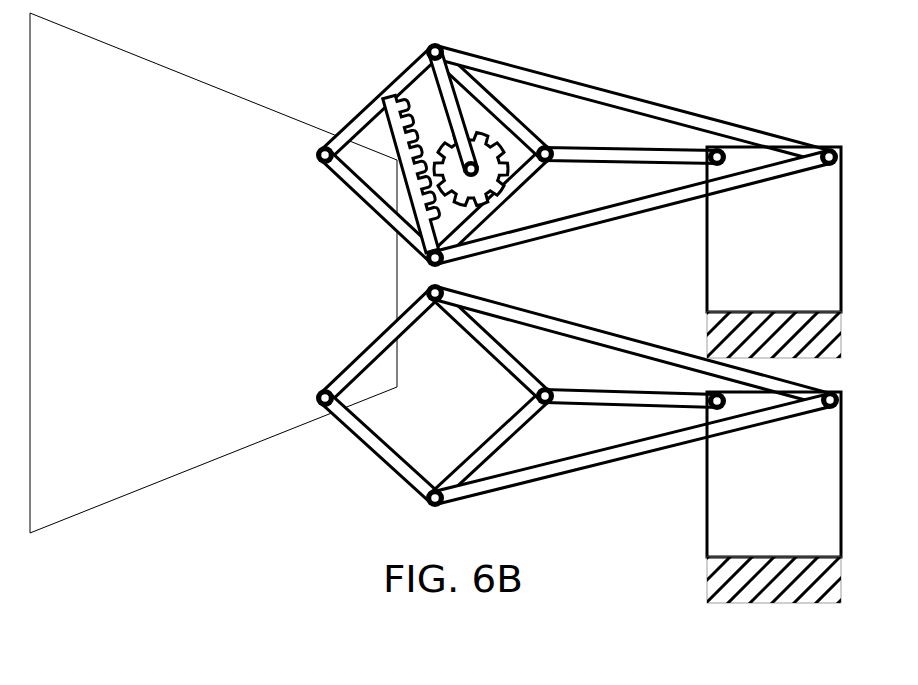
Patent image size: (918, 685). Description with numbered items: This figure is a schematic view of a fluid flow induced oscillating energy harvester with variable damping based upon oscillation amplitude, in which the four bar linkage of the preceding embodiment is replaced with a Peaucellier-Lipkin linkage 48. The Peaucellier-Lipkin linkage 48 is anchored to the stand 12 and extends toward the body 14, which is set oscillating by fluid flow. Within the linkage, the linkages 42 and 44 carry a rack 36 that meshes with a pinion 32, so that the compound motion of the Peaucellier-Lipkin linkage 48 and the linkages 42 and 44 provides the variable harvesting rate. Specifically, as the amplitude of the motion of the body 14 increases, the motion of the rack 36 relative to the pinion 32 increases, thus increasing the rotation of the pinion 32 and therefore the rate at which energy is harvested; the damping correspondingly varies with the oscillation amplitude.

The stand 12 is at (705, 260).
The body 14 is at (190, 78).
The pinion 32 is at (510, 192).
The rack 36 is at (437, 127).
The linkage 42 is at (420, 247).
The linkage 44 is at (468, 88).
The Peaucellier-Lipkin linkage 48 is at (578, 232).